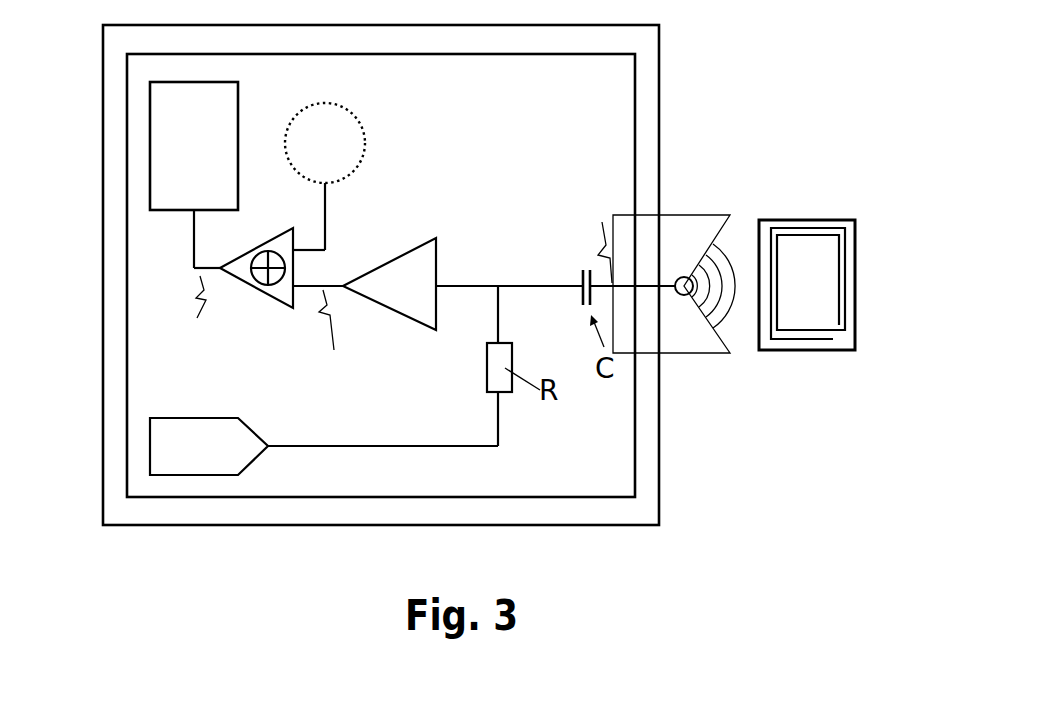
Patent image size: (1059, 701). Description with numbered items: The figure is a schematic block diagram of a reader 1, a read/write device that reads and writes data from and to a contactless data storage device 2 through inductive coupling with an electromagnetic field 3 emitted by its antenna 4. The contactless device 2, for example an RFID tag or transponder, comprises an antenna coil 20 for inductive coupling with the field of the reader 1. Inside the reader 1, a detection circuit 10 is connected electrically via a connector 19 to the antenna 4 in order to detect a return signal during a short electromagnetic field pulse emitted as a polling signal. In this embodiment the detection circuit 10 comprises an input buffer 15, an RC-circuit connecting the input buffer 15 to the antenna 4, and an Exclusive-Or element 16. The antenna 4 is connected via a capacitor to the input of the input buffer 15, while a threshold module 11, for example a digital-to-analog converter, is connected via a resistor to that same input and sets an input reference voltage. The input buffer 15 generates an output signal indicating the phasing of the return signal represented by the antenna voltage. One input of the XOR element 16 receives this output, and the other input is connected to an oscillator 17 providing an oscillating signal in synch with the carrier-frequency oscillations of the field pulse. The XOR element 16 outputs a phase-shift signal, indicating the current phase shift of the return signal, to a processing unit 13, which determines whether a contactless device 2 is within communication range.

The reader 1 is at (124, 547).
The contactless data storage device 2 is at (819, 282).
The electromagnetic field 3 is at (723, 207).
The antenna 4 is at (686, 296).
The detection circuit 10 is at (623, 83).
The threshold module 11 is at (162, 455).
The processing unit 13 is at (165, 182).
The input buffer 15 is at (427, 262).
The XOR element 16 is at (266, 226).
The oscillator 17 is at (357, 135).
The connector 19 is at (640, 286).
The antenna coil 20 is at (815, 232).